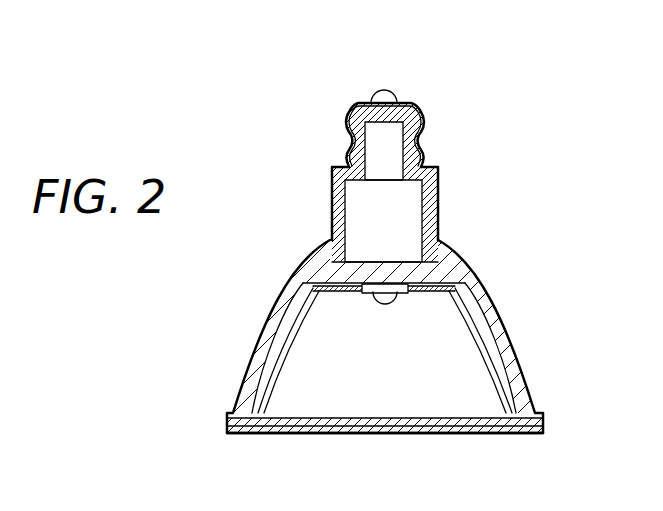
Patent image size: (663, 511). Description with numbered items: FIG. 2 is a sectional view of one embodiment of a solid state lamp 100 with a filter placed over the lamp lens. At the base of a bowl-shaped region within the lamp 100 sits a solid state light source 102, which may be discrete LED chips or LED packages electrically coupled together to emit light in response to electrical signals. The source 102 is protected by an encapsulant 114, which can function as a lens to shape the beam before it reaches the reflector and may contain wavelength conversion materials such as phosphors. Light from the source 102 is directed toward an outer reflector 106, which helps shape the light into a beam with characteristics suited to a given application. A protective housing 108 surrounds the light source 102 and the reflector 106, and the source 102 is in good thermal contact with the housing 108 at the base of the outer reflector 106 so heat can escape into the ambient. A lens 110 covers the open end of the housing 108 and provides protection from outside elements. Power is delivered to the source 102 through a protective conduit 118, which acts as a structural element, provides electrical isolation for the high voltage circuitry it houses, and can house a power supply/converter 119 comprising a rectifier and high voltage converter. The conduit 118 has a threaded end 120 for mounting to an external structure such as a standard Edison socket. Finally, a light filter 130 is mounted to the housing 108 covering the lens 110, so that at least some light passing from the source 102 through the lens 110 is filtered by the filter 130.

The solid state lamp 100 is at (283, 144).
The solid state light source 102 is at (385, 298).
The outer reflector 106 is at (478, 326).
The protective housing 108 is at (527, 373).
The lens 110 is at (342, 408).
The encapsulant 114 is at (378, 305).
The protective conduit 118 is at (440, 215).
The power supply/converter 119 is at (357, 193).
The threaded end 120 is at (425, 138).
The light filter 130 is at (467, 437).